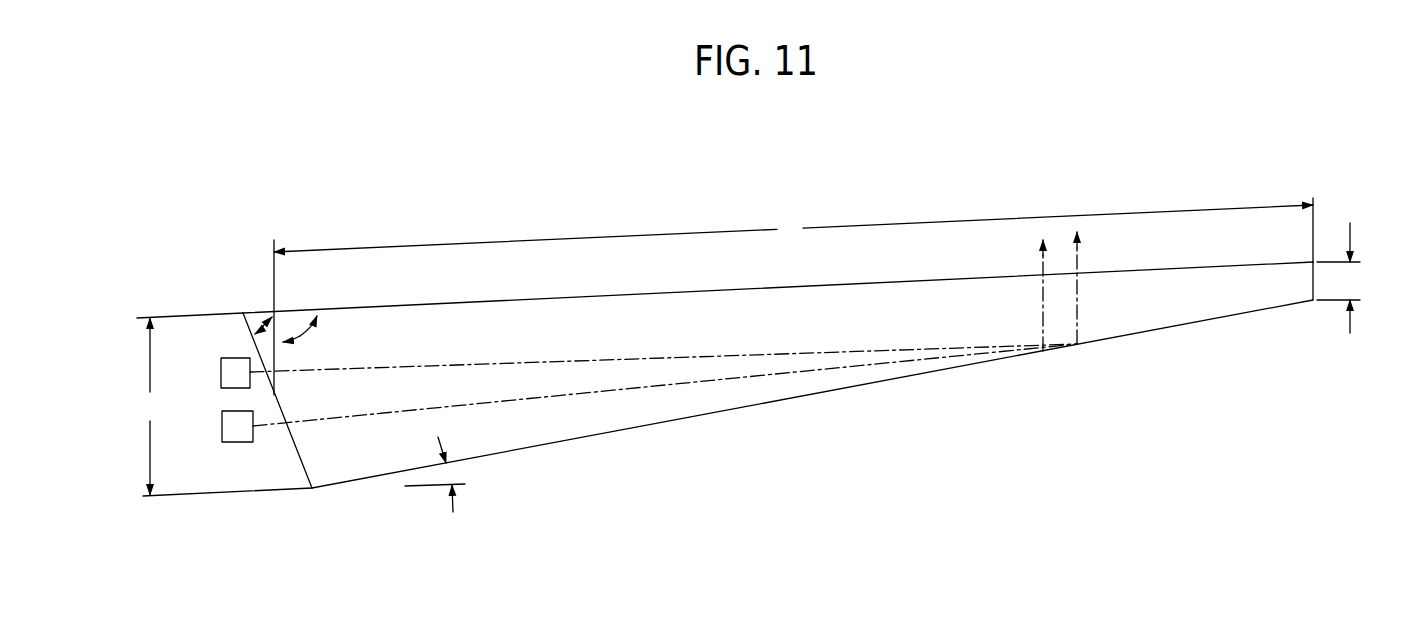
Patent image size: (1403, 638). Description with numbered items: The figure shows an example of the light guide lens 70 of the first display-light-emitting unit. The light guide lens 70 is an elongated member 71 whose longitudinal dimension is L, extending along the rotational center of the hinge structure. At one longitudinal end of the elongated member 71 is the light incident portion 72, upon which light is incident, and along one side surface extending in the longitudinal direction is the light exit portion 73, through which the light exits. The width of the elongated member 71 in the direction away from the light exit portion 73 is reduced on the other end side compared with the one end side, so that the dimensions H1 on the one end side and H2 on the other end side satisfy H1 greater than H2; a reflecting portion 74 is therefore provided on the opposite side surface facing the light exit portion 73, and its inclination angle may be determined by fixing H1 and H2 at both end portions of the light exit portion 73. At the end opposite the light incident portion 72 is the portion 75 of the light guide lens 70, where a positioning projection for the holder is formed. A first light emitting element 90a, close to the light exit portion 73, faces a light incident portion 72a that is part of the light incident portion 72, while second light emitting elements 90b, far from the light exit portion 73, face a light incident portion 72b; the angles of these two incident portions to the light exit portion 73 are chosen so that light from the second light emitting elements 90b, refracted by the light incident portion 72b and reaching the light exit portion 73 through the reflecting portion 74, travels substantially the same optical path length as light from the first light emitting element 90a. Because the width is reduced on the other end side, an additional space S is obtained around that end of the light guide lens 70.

The light guide lens 70 is at (780, 414).
The elongated member 71 is at (968, 355).
The light incident portion 72 is at (294, 478).
The light incident portion 72a is at (267, 363).
The light incident portion 72b is at (293, 457).
The light exit portion 73 is at (867, 283).
The reflecting portion 74 is at (623, 433).
The portion facing the light incident portion 75 is at (1314, 281).
The first light emitting element 90a is at (221, 372).
The second light emitting element 90b is at (222, 427).
The additional space S is at (1080, 379).
The dimension in the longitudinal direction L is at (793, 296).
The dimension on the one end side H1 is at (224, 404).
The dimension on the other end side H2 is at (1342, 278).